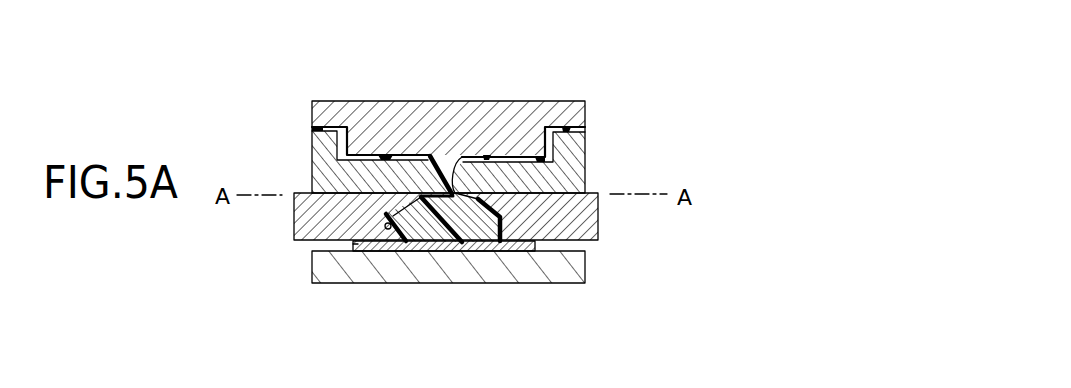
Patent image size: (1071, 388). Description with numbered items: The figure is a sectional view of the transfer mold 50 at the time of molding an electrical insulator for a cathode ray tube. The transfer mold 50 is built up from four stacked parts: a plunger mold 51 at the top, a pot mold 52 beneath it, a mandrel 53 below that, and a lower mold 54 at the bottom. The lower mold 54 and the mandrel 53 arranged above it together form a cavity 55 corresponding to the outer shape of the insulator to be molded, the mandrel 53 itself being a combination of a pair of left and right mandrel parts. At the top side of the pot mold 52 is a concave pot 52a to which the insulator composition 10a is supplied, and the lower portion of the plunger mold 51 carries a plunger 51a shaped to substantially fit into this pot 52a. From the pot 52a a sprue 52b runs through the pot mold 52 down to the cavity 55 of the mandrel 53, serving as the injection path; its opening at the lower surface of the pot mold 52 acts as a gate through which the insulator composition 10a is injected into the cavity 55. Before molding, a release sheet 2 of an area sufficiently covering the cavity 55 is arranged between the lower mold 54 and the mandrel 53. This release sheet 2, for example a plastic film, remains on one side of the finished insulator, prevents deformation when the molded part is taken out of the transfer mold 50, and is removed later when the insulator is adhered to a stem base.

The transfer mold 50 is at (611, 78).
The plunger mold 51 is at (409, 107).
The plunger 51a is at (501, 136).
The pot mold 52 is at (577, 143).
The pot 52a is at (348, 182).
The sprue 52b is at (466, 187).
The mandrel 53 is at (299, 193).
The lower mold 54 is at (567, 268).
The cavity 55 is at (385, 226).
The insulator composition 10a is at (597, 241).
The release sheet 2 is at (354, 244).